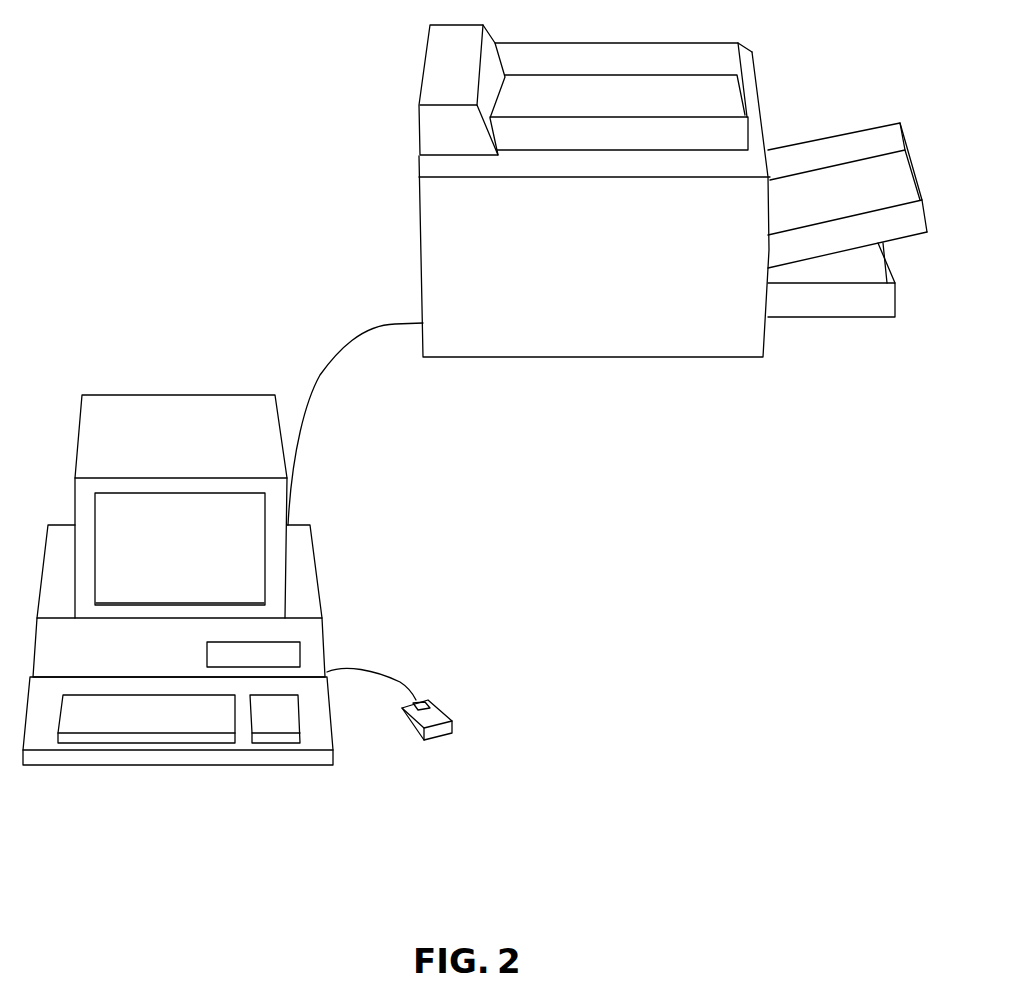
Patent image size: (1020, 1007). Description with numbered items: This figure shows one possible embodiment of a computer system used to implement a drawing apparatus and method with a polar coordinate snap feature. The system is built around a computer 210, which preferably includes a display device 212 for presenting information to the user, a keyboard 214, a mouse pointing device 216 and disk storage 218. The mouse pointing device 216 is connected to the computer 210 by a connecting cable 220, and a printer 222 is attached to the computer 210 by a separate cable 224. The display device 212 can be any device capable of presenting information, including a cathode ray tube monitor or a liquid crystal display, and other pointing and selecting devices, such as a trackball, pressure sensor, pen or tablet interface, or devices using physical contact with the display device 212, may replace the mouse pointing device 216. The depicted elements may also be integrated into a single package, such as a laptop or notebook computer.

The computer 210 is at (303, 568).
The display device 212 is at (175, 410).
The keyboard 214 is at (320, 728).
The mouse pointing device 216 is at (443, 718).
The disk storage 218 is at (283, 650).
The connecting cable 220 is at (400, 682).
The printer 222 is at (755, 128).
The cable 224 is at (342, 348).